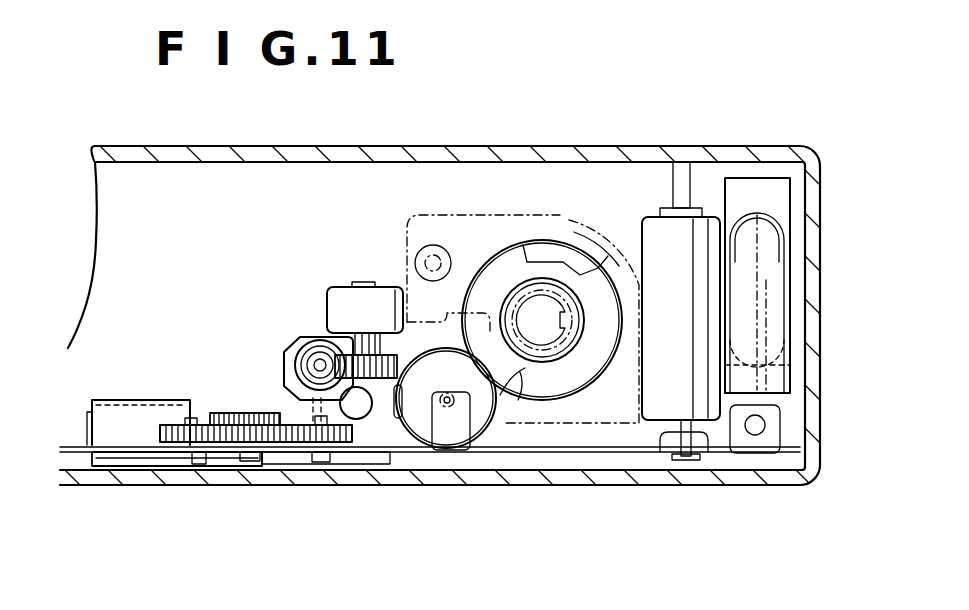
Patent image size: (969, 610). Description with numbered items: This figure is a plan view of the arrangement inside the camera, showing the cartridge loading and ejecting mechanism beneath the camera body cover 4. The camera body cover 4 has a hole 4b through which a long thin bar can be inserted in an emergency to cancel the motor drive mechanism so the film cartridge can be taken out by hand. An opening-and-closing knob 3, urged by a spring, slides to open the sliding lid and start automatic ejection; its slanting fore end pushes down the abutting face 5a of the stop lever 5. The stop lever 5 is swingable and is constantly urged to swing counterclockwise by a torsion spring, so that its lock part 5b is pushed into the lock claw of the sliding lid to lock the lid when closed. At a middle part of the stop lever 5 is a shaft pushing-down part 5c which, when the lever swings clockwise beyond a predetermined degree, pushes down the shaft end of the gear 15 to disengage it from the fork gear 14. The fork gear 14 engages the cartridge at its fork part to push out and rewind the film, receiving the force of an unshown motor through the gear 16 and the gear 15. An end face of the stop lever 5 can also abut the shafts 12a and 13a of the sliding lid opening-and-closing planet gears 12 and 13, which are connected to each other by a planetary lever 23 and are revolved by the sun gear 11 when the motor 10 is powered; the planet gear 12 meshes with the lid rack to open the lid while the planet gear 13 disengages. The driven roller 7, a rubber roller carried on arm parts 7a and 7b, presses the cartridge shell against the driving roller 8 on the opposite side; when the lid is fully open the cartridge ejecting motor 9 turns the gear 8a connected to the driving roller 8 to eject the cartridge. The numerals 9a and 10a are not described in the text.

The opening-and-closing knob 3 is at (767, 260).
The camera body cover 4 is at (737, 153).
The hole 4b is at (767, 423).
The stop lever 5 is at (533, 453).
The abutting face 5a is at (757, 447).
The lock part 5b is at (660, 433).
The shaft pushing-down part 5c is at (452, 432).
The driven roller 7 is at (655, 258).
The arm part 7a is at (708, 427).
The arm part 7b is at (673, 207).
The driving roller 8 is at (347, 308).
The gear 8a is at (378, 338).
The cartridge ejecting motor 9 is at (283, 365).
The arm pivot 9a is at (300, 345).
The motor 10 is at (140, 418).
The drive gear 10a is at (223, 420).
The sun gear 11 is at (230, 440).
The sliding lid opening-and-closing planet gear 12 is at (172, 440).
The shaft 12a is at (205, 440).
The sliding lid opening-and-closing planet gear 13 is at (305, 440).
The shaft 13a is at (318, 440).
The fork gear 14 is at (573, 370).
The gear 15 is at (498, 395).
The gear 16 is at (372, 440).
The planetary lever 23 is at (278, 440).